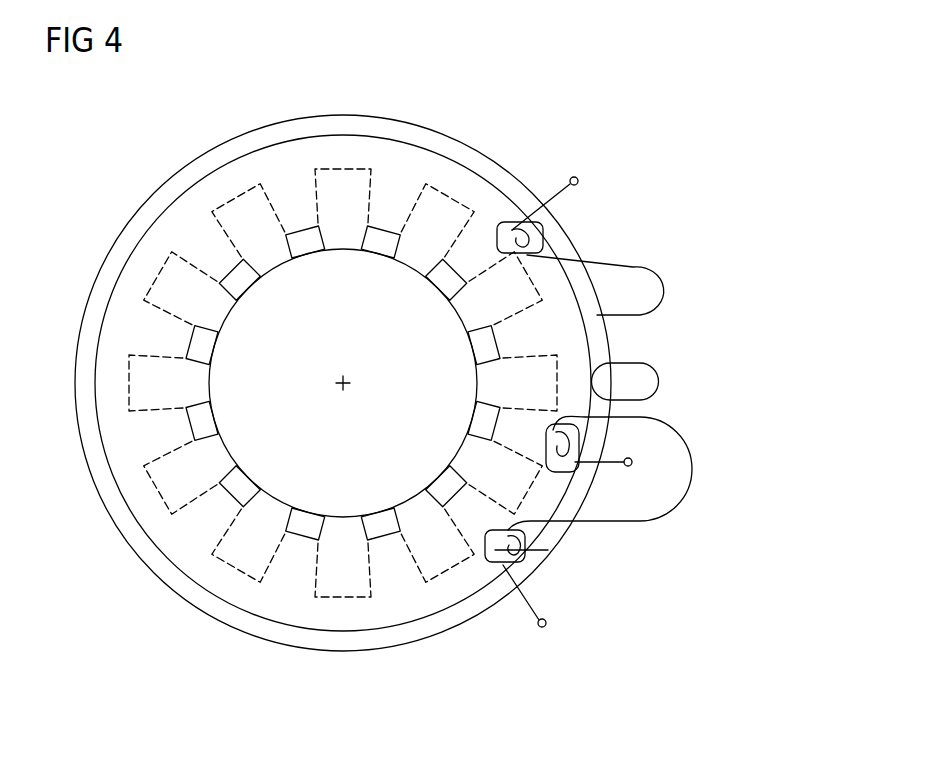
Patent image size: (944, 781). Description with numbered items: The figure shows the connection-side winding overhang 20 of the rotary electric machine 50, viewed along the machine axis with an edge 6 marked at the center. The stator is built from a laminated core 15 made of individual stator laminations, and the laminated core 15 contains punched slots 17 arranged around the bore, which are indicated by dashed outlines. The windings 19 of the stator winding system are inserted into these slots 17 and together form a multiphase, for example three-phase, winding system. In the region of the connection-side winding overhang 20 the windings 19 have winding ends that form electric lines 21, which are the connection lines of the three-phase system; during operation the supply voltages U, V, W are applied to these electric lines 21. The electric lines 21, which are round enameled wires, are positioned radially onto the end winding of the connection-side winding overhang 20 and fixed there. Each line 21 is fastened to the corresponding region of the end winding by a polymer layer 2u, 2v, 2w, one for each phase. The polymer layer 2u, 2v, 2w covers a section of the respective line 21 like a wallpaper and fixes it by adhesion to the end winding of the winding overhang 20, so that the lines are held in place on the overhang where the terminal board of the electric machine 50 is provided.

The electric machine 50 is at (606, 120).
The connection-side winding overhang 20 is at (178, 217).
The windings 19 is at (129, 323).
The slots 17 is at (262, 195).
The edge 6 is at (340, 380).
The laminated core 15 is at (530, 180).
The electric lines 21 is at (667, 292).
The polymer layer 2u is at (545, 237).
The polymer layer 2v is at (578, 470).
The polymer layer 2w is at (548, 551).
The supply voltage U is at (559, 199).
The supply voltage V is at (616, 466).
The supply voltage W is at (541, 604).